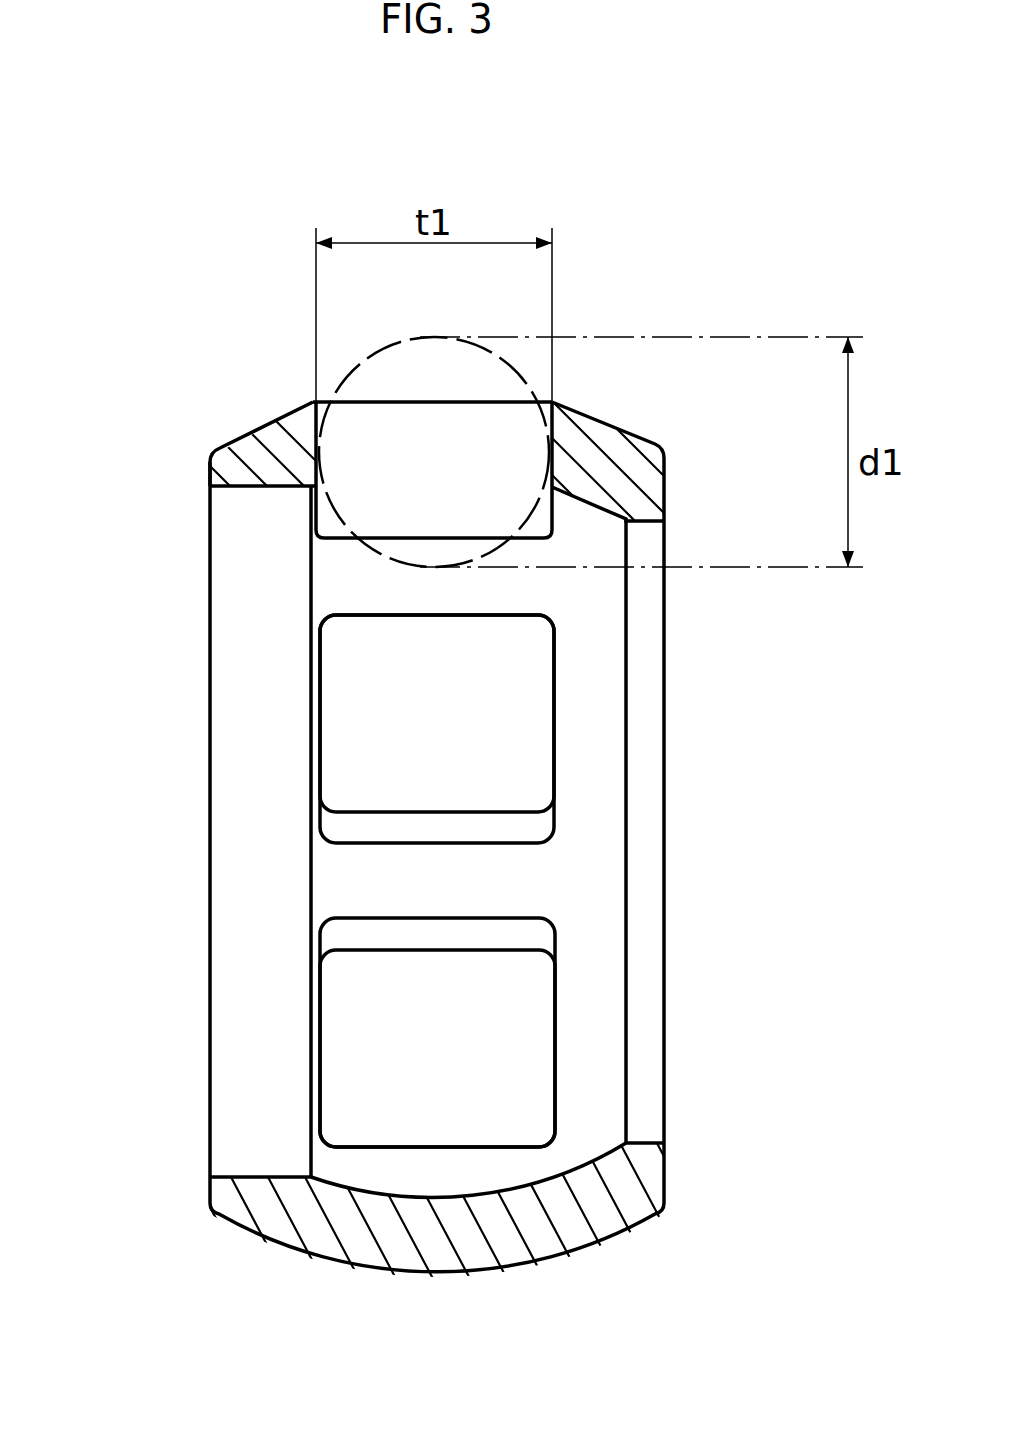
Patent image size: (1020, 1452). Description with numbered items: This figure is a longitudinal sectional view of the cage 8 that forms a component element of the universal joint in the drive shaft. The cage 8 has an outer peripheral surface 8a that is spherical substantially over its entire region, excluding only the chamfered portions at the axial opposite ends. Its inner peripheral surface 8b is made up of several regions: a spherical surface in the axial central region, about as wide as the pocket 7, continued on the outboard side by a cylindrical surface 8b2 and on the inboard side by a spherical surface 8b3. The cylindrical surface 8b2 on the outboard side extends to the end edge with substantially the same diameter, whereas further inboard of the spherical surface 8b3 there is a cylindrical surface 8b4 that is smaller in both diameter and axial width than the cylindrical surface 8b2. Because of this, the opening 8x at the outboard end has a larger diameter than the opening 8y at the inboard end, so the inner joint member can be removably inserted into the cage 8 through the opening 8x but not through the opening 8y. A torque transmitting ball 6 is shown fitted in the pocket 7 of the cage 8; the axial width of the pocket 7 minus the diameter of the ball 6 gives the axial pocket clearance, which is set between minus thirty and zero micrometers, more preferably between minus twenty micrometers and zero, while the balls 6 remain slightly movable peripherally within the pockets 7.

The torque transmitting ball 6 is at (351, 362).
The pocket 7 is at (552, 450).
The cage 8 is at (667, 423).
The outer peripheral surface 8a is at (262, 426).
The inner peripheral surface 8b is at (452, 1197).
The cylindrical surface 8b2 is at (248, 487).
The spherical surface 8b3 is at (587, 502).
The cylindrical surface 8b4 is at (640, 1142).
The opening 8x is at (670, 793).
The opening 8y is at (208, 805).